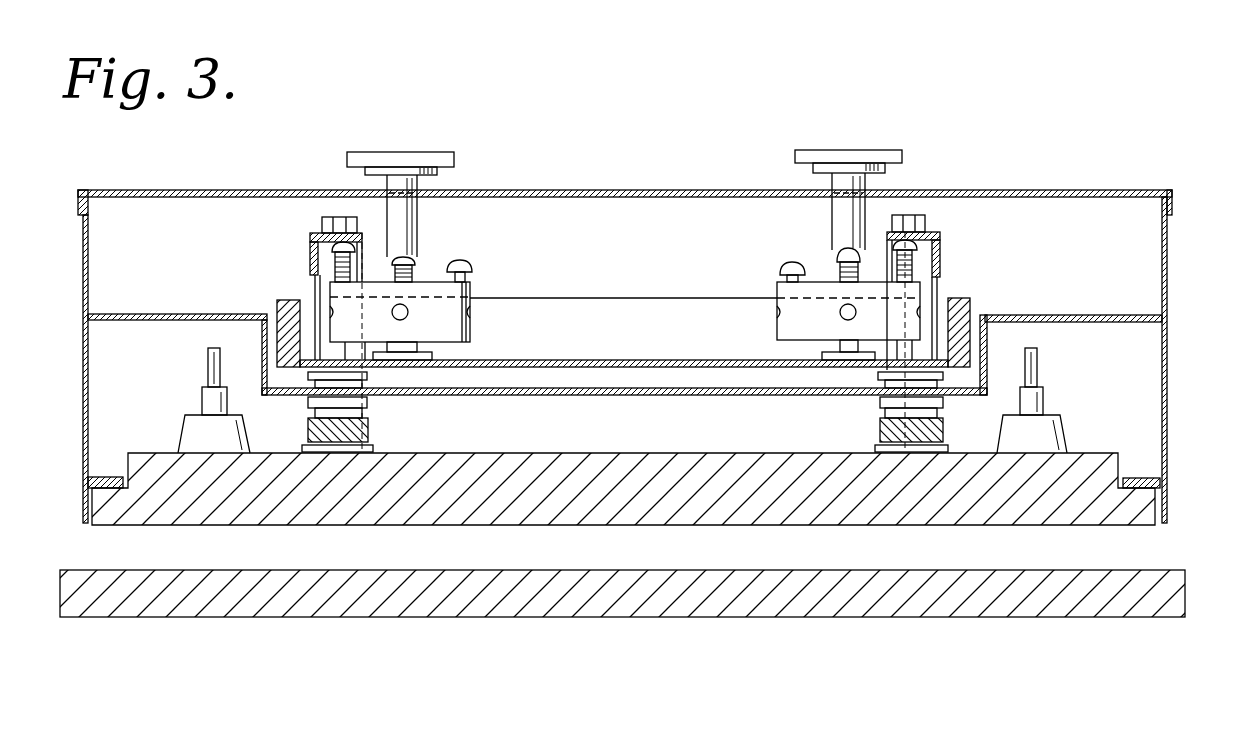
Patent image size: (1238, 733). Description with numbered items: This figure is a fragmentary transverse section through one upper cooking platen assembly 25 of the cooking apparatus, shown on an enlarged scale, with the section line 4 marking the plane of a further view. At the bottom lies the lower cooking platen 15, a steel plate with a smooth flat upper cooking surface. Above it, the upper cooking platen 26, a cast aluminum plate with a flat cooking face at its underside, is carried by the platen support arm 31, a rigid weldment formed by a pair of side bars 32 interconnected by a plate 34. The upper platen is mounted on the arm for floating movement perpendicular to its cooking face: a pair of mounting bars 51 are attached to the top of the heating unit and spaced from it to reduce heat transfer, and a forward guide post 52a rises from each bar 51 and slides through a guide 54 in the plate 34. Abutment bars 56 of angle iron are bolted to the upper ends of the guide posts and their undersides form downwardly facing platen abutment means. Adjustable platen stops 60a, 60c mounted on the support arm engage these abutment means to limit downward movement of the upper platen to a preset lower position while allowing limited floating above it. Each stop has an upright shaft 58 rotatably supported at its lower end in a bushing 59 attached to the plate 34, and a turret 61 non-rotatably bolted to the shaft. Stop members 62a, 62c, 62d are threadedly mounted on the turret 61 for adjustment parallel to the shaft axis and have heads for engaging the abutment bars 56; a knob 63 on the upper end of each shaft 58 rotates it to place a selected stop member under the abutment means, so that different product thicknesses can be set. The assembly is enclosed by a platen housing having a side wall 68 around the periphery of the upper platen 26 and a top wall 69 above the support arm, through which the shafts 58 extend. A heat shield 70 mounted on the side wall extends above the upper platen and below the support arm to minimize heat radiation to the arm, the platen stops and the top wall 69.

The section line 4- 4 is at (624, 225).
The lower cooking platen 15 is at (917, 600).
The upper cooking platen assembly 25 is at (645, 317).
The upper cooking platen 26 is at (742, 510).
The platen support arm 31 is at (270, 297).
The side bars 32 is at (967, 307).
The plate 34 is at (595, 360).
The mounting bars 51 is at (358, 430).
The forward guide post 52a is at (330, 282).
The guides 54 is at (323, 372).
The abutment bars 56 is at (310, 233).
The upright shaft 58 is at (842, 218).
The bushing 59 is at (823, 357).
The adjustable platen stop 60a is at (475, 283).
The adjustable platen stop 60c is at (775, 280).
The turret 61 is at (777, 288).
The adjustable stop member 62a is at (342, 247).
The adjustable stop member 62c is at (460, 262).
The adjustable stop member 62d is at (405, 257).
The knob 63 is at (867, 153).
The side wall 68 is at (1167, 358).
The top wall 69 is at (980, 190).
The heat shield 70 is at (527, 395).